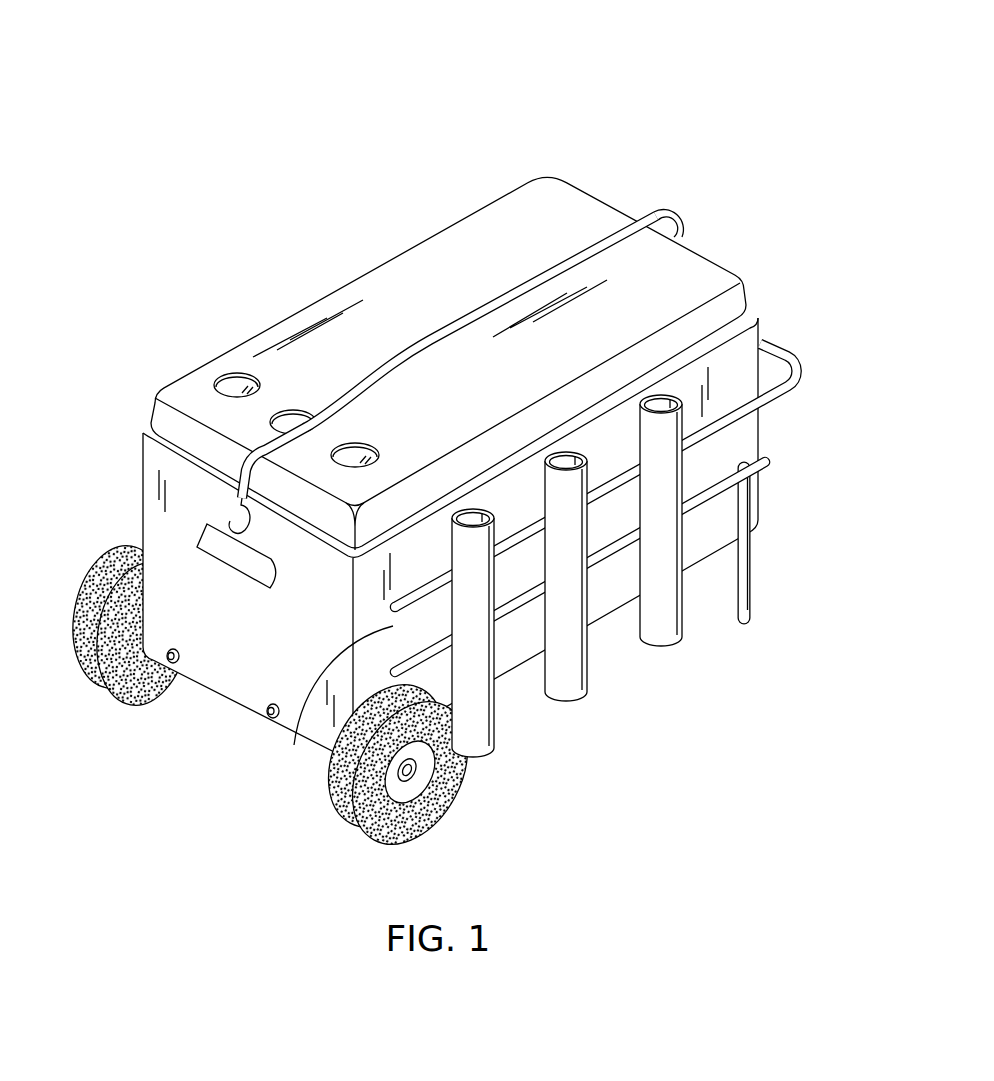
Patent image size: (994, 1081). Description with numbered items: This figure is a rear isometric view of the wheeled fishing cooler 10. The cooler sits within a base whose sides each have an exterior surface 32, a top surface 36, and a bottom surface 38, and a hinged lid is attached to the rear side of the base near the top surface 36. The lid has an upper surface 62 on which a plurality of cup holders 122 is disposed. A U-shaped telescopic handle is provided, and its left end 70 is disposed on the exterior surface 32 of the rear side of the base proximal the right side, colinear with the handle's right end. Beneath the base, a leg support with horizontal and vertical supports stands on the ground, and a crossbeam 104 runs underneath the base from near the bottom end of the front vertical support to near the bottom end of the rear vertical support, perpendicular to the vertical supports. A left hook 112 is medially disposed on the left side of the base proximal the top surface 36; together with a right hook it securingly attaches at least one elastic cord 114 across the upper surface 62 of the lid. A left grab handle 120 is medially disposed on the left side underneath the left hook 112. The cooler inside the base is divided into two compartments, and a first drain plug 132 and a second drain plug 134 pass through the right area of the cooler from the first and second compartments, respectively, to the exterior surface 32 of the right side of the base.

The wheeled fishing cooler 10 is at (645, 113).
The exterior surface 32 is at (747, 356).
The top surface 36 is at (167, 458).
The bottom surface 38 is at (216, 693).
The upper surface 62 is at (410, 277).
The left end 70 is at (296, 747).
The crossbeam 104 is at (727, 555).
The left hook 112 is at (222, 520).
The elastic cord 114 is at (542, 275).
The left grab handle 120 is at (203, 537).
The cup holders 122 is at (350, 452).
The first drain plug 132 is at (150, 697).
The second drain plug 134 is at (268, 722).